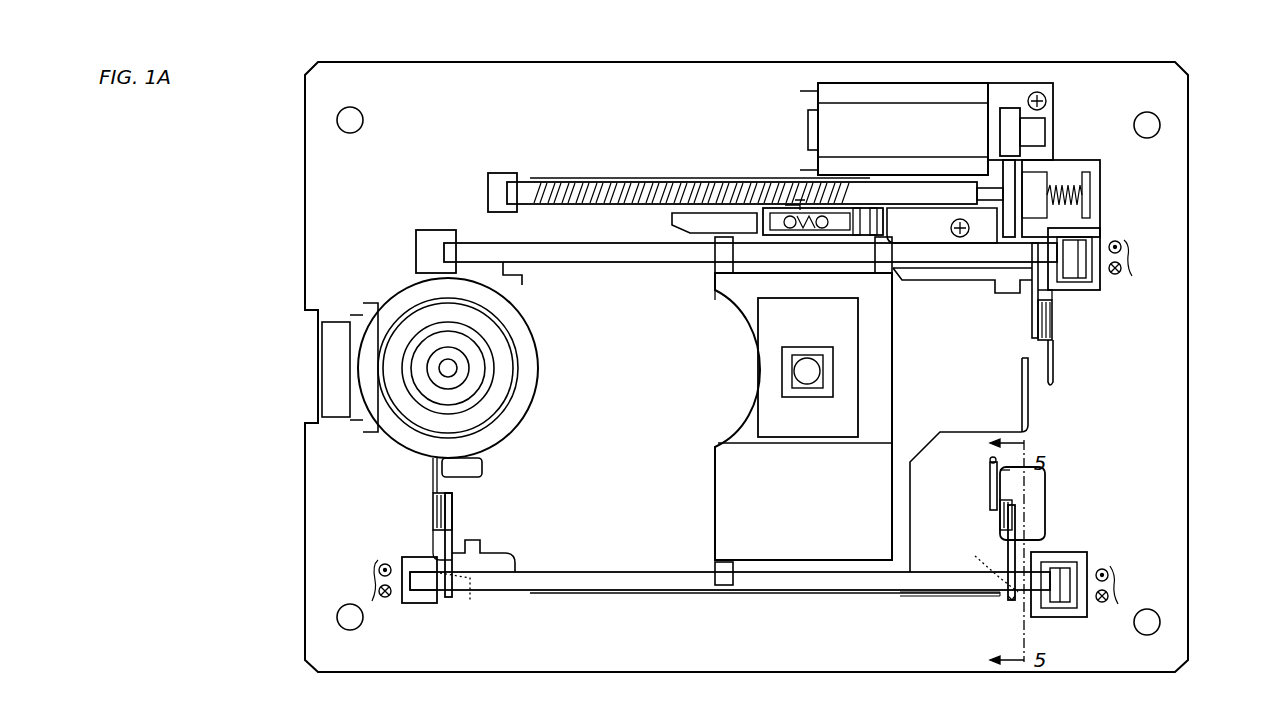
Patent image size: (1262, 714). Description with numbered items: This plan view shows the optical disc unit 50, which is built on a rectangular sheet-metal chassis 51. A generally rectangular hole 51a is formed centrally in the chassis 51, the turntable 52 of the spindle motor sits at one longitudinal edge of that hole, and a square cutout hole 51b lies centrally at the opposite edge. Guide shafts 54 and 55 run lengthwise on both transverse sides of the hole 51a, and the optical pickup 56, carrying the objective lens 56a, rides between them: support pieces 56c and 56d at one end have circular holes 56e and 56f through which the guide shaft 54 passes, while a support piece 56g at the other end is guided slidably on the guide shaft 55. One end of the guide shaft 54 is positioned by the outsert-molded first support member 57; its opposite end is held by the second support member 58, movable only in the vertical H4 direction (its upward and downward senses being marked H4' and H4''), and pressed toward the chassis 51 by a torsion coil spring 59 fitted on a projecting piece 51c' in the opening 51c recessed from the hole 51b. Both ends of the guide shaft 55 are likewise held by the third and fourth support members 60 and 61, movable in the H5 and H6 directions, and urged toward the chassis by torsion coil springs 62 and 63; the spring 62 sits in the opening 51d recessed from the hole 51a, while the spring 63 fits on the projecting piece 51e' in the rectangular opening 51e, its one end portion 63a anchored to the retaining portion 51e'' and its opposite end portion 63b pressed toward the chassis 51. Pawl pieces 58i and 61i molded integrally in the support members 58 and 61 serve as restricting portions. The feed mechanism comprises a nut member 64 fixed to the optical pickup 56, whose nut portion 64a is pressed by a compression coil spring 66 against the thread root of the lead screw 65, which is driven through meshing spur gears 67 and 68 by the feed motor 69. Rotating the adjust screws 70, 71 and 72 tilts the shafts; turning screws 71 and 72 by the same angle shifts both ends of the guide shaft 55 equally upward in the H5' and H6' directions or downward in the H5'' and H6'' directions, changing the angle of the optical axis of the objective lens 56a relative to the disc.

The optical disc unit 50 is at (1219, 88).
The chassis 51 is at (1172, 322).
The hole 51a is at (595, 530).
The square hole 51b is at (1033, 390).
The opening 51c is at (976, 334).
The projecting piece 51c' is at (994, 366).
The opening 51d is at (495, 496).
The rectangular opening 51e is at (1058, 503).
The projecting piece 51e' is at (1052, 515).
The retaining portion 51e'' is at (1052, 461).
The turntable 52 is at (530, 377).
The guide shaft 54 is at (600, 264).
The guide shaft 55 is at (672, 578).
The optical pickup 56 is at (710, 478).
The objective lens 56a is at (795, 374).
The support piece 56c is at (715, 296).
The support piece 56d is at (890, 265).
The circular hole 56e is at (720, 262).
The circular hole 56f is at (897, 258).
The support piece 56g is at (726, 590).
The first support member 57 is at (437, 228).
The second support member 58 is at (1094, 292).
The pawl piece 58i is at (1080, 272).
The torsion coil spring 59 is at (1015, 316).
The third support member 60 is at (407, 556).
The fourth support member 61 is at (1090, 560).
The pawl piece 61i is at (1066, 590).
The torsion coil spring 62 is at (455, 536).
The torsion coil spring 63 is at (1003, 557).
The one end portion 63a is at (990, 472).
The opposite end portion 63b is at (1008, 598).
The nut member 64 is at (770, 190).
The nut portion 64a is at (800, 198).
The lead screw 65 is at (549, 188).
The compression coil spring 66 is at (822, 236).
The spur gear 67 is at (1010, 165).
The spur gear 68 is at (1012, 128).
The feed motor 69 is at (830, 110).
The adjust screw 70 is at (1028, 300).
The adjust screw 71 is at (470, 600).
The adjust screw 72 is at (980, 570).
The H4 direction H4 is at (1146, 258).
The adjustment height upper limit H4' is at (1129, 216).
The adjustment height lower limit H4'' is at (1149, 285).
The H5 direction H5 is at (351, 580).
The H5' direction H5' is at (363, 546).
The H5'' direction H5'' is at (399, 619).
The H6 direction H6 is at (1134, 585).
The H6' direction H6' is at (1130, 561).
The H6'' direction H6'' is at (1116, 618).